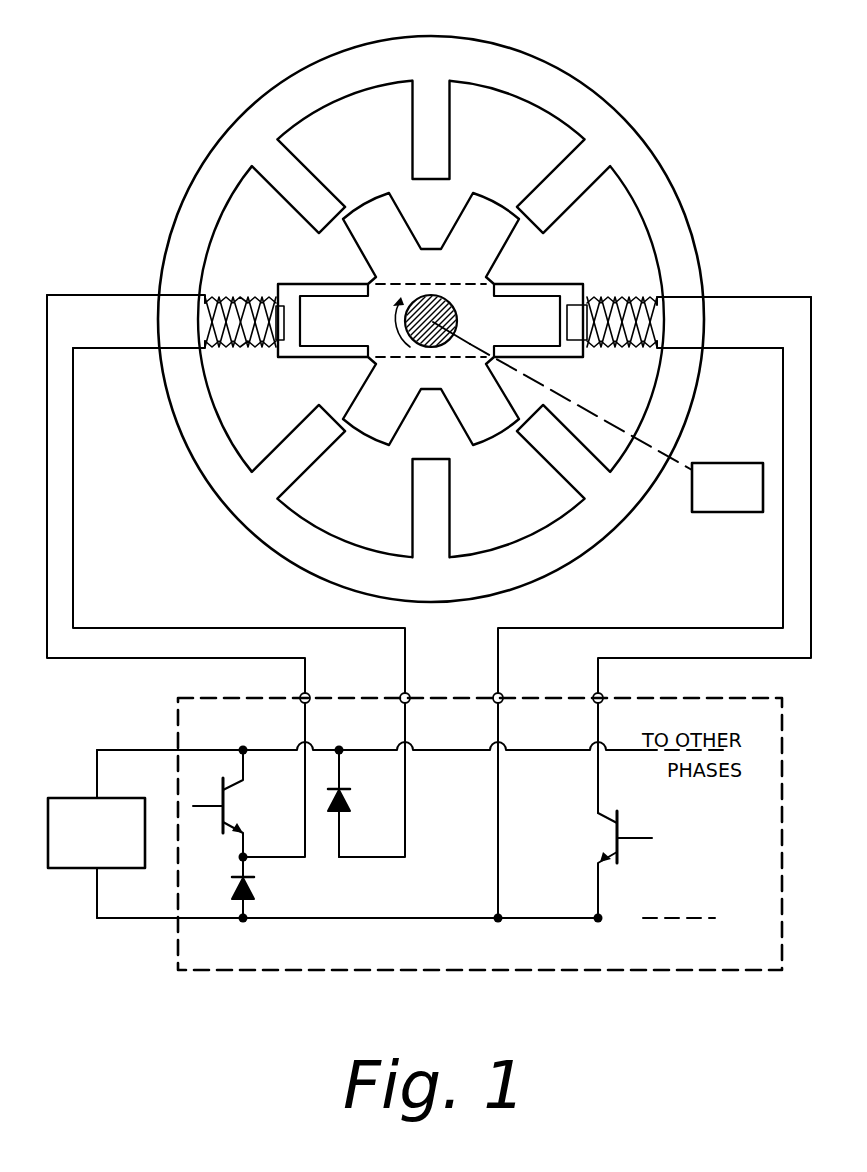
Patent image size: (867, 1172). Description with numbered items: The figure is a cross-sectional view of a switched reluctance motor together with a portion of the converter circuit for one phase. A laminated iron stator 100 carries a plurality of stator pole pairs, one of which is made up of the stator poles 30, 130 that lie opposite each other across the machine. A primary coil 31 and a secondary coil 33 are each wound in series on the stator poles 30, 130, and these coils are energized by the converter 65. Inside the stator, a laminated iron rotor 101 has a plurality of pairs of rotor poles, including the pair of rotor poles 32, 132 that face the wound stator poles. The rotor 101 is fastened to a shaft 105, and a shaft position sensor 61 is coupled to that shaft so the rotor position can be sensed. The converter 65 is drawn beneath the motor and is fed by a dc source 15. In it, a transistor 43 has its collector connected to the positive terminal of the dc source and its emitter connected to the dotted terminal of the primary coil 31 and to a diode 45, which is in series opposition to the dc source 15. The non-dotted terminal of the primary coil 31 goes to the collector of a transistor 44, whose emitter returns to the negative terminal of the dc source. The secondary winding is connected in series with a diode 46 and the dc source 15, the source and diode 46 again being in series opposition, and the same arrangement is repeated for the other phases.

The laminated iron stator 100 is at (585, 83).
The laminated iron rotor 101 is at (447, 276).
The stator pole 130 is at (292, 303).
The stator pole 30 is at (578, 300).
The primary coil 31 is at (214, 295).
The secondary coil 33 is at (214, 352).
The rotor pole 132 is at (339, 332).
The rotor pole 32 is at (555, 332).
The shaft 105 is at (594, 410).
The shaft position sensor 61 is at (738, 497).
The dc source 15 is at (105, 852).
The transistor 43 is at (222, 794).
The transistor 44 is at (624, 827).
The diode 45 is at (254, 883).
The diode 46 is at (349, 800).
The converter 65 is at (237, 973).